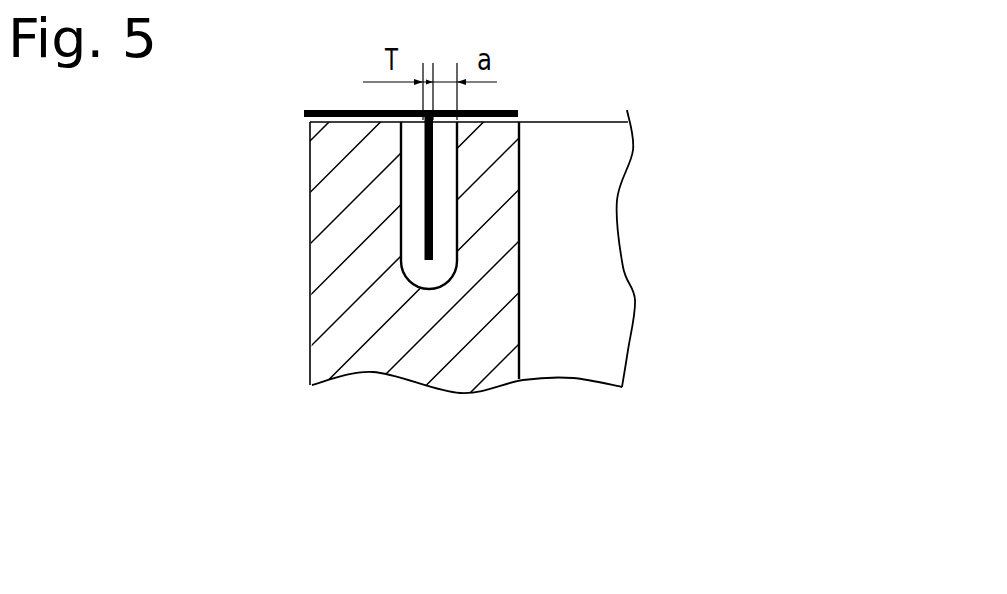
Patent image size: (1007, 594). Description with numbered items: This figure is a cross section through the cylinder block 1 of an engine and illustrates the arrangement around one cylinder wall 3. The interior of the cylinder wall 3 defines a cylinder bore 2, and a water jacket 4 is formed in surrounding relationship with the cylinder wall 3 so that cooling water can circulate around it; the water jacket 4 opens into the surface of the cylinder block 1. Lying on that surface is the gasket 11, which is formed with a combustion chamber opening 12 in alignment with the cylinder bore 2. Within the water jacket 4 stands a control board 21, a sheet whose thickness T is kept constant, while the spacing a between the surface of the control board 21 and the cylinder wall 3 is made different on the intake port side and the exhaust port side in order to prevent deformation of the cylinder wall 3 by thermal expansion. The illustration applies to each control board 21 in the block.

The cylinder block 1 is at (418, 390).
The cylinder bore 2 is at (597, 345).
The cylinder wall 3 is at (510, 268).
The water jacket 4 is at (415, 273).
The gasket 11 is at (332, 108).
The combustion chamber opening 12 is at (518, 112).
The control board 21 is at (435, 252).